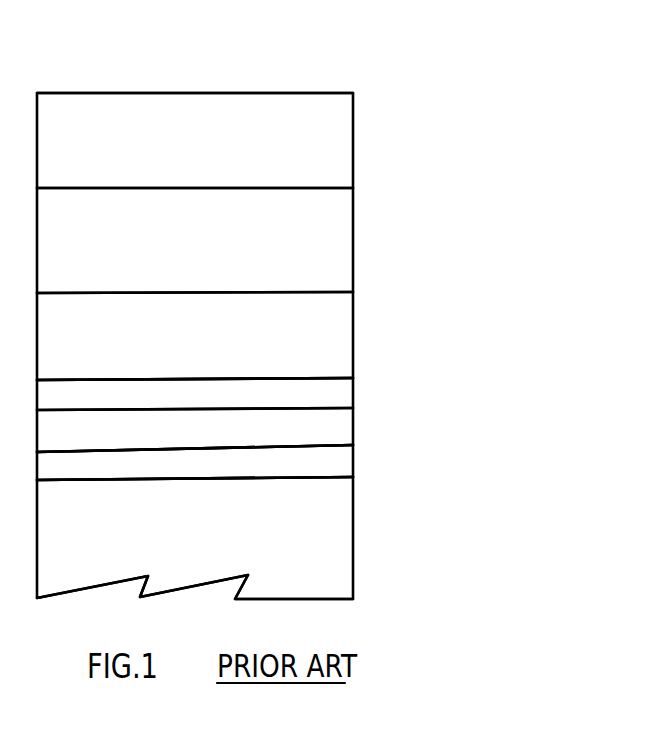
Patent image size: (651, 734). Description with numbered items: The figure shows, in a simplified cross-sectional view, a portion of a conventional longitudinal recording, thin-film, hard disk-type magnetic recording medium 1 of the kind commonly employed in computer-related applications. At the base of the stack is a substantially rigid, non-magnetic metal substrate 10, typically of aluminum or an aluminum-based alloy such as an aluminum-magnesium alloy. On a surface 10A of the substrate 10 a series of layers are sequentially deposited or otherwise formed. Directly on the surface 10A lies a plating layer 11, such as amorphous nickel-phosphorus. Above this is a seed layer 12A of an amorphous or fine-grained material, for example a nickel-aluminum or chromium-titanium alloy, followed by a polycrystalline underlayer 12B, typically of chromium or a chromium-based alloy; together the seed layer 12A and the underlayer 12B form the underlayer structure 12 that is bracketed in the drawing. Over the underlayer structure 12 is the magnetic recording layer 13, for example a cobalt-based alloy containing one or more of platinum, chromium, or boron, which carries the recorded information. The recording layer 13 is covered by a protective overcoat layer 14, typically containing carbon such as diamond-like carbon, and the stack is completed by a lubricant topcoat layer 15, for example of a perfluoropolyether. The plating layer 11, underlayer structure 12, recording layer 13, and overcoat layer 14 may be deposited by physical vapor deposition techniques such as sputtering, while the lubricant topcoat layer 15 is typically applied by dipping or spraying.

The magnetic recording medium 1 is at (284, 80).
The lubricant topcoat layer 15 is at (356, 138).
The protective overcoat layer 14 is at (356, 235).
The magnetic recording layer 13 is at (356, 333).
The polycrystalline underlayer 12B is at (356, 393).
The seed layer 12A is at (356, 425).
The underlayer structure 12 is at (537, 397).
The plating layer 11 is at (356, 462).
The substrate surface 10A is at (328, 478).
The non-magnetic metal substrate 10 is at (356, 541).